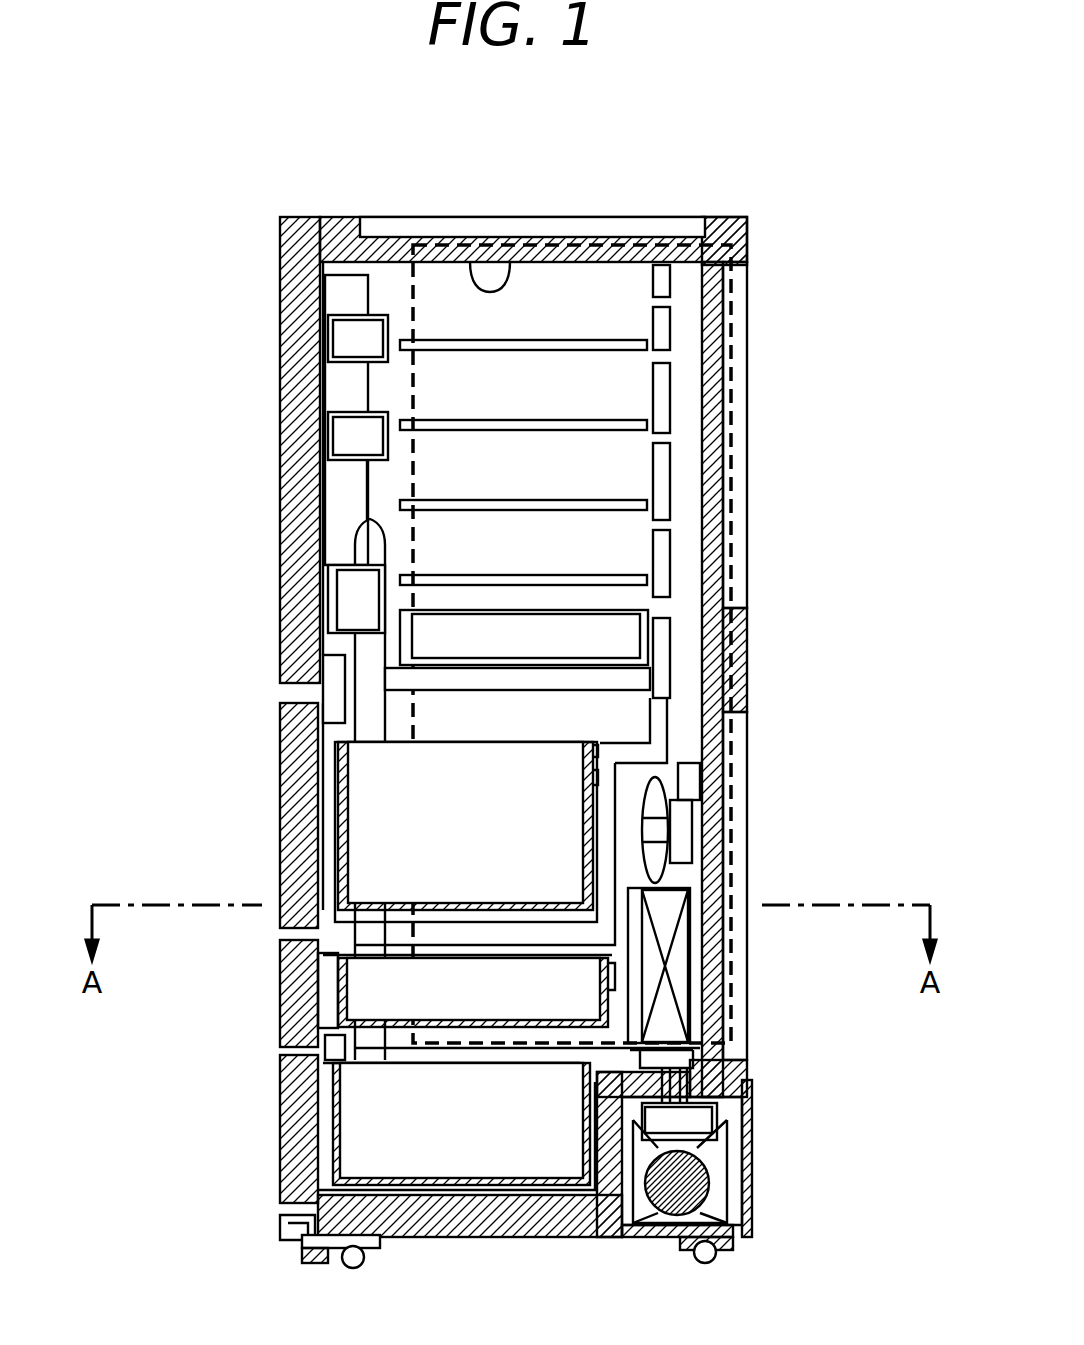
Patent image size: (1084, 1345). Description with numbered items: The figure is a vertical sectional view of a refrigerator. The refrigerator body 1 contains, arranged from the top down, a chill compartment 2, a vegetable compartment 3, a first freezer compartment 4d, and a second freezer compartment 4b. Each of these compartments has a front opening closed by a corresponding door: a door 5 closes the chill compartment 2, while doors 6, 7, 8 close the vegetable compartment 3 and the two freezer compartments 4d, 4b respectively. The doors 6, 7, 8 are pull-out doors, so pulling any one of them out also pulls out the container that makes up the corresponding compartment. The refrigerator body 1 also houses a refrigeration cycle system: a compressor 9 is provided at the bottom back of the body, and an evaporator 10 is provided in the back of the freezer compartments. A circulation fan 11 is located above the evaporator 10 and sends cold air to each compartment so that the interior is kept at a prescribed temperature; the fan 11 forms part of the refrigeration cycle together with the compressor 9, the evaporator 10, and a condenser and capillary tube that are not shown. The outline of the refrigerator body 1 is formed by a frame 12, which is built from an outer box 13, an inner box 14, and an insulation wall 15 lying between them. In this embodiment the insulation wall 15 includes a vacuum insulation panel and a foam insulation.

The refrigerator body 1 is at (747, 330).
The chill compartment 2 is at (535, 485).
The vegetable compartment 3 is at (505, 850).
The freezing compartment (upper) 4d is at (512, 1008).
The second freezer compartment 4b is at (497, 1150).
The door 5 is at (300, 496).
The door 6 is at (300, 800).
The door 7 is at (300, 1010).
The door 8 is at (300, 1140).
The compressor 9 is at (690, 1180).
The evaporator 10 is at (682, 985).
The circulation fan 11 is at (655, 790).
The frame 12 is at (735, 232).
The outer box 13 is at (448, 217).
The inner box 14 is at (487, 283).
The insulation wall 15 is at (715, 442).